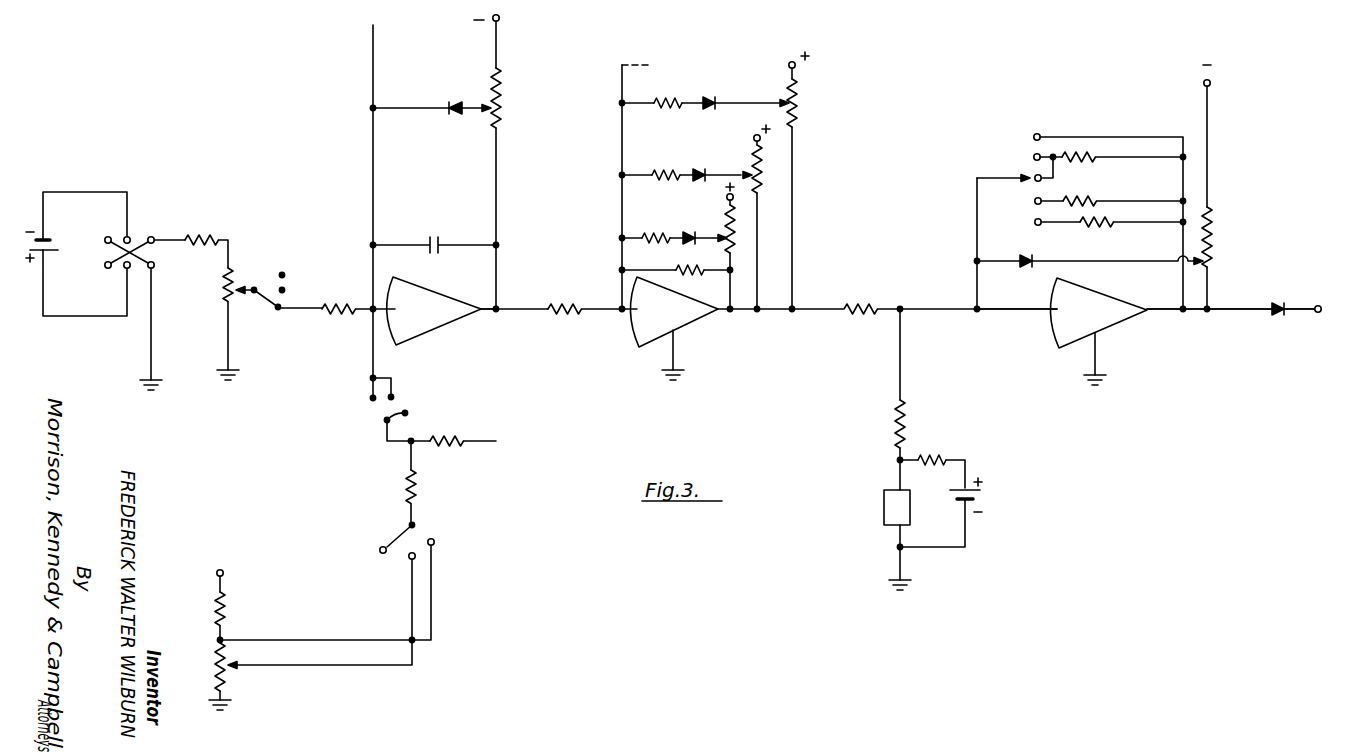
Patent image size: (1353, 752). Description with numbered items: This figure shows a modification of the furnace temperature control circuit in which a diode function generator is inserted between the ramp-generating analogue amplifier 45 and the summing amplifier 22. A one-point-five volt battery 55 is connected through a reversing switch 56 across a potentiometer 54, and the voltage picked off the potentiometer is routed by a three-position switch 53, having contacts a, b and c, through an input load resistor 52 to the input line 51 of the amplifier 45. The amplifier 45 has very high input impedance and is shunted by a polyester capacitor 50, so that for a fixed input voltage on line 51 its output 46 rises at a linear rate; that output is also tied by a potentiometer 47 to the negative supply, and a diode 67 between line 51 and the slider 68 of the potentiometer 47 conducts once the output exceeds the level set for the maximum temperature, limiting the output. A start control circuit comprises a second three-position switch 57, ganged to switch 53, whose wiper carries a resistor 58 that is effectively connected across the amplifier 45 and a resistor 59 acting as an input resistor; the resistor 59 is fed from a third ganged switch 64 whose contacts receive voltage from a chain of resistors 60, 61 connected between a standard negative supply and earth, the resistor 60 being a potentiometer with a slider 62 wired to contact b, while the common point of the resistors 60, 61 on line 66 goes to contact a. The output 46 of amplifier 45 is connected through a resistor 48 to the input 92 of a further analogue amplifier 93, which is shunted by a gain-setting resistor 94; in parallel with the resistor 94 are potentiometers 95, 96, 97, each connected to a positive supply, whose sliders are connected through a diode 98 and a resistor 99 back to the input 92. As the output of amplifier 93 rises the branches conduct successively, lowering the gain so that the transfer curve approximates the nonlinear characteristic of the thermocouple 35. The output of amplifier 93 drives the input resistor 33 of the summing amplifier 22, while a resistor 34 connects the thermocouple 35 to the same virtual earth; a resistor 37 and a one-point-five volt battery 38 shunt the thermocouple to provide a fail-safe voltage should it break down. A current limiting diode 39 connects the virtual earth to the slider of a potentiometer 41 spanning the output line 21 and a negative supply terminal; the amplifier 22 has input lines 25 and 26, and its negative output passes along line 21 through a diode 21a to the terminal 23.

The battery 55 is at (48, 240).
The reversing switch 56 is at (140, 236).
The potentiometer 54 is at (222, 324).
The three-position switch 53 is at (255, 287).
The input load resistor 52 is at (339, 292).
The input line 51 is at (368, 318).
The potentiometer 47 is at (502, 112).
The slider 68 is at (488, 103).
The diode 67 is at (455, 116).
The polyester capacitor 50 is at (436, 232).
The analogue amplifier 45 is at (434, 311).
The amplifier output 46 is at (485, 320).
The resistor 48 is at (580, 306).
The input 92 is at (619, 313).
The resistor 99 is at (676, 128).
The diode 98 is at (698, 172).
The potentiometer 97 is at (770, 182).
The potentiometer 96 is at (747, 218).
The potentiometer 95 is at (737, 232).
The resistor 94 is at (690, 266).
The analogue amplifier 93 is at (674, 328).
The resistor 33 is at (861, 294).
The resistor 34 is at (916, 445).
The resistor 37 is at (932, 460).
The battery 38 is at (983, 495).
The thermocouple 35 is at (884, 510).
The current limiting diode 39 is at (1088, 243).
The potentiometer 41 is at (1220, 188).
The input line 25 is at (1017, 306).
The summing amplifier 22 is at (1098, 313).
The input line 26 is at (1099, 356).
The output line 21 is at (1228, 313).
The diode 21a is at (1272, 316).
The terminal 23 is at (1316, 312).
The second three-position switch 57 is at (368, 420).
The resistor 58 is at (441, 428).
The resistor 59 is at (418, 489).
The third three-position switch 64 is at (393, 536).
The line 66 is at (436, 578).
The resistor 61 is at (208, 612).
The resistor 60 is at (208, 670).
The slider 62 is at (232, 663).